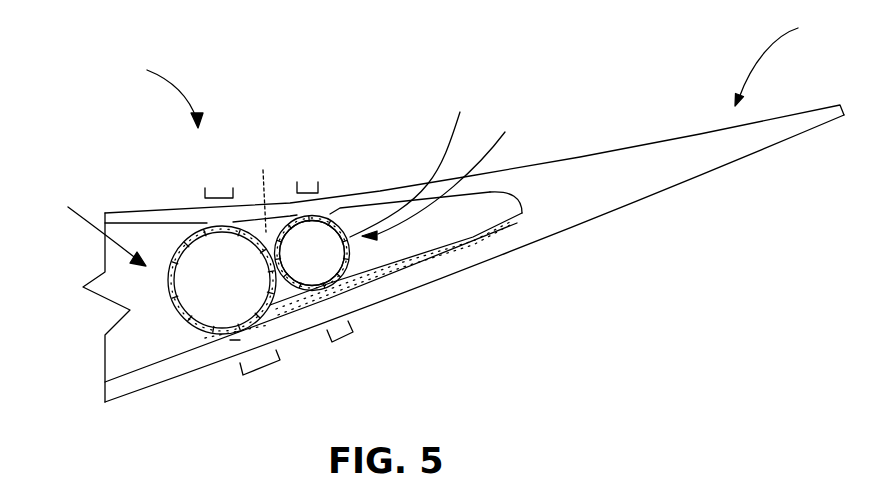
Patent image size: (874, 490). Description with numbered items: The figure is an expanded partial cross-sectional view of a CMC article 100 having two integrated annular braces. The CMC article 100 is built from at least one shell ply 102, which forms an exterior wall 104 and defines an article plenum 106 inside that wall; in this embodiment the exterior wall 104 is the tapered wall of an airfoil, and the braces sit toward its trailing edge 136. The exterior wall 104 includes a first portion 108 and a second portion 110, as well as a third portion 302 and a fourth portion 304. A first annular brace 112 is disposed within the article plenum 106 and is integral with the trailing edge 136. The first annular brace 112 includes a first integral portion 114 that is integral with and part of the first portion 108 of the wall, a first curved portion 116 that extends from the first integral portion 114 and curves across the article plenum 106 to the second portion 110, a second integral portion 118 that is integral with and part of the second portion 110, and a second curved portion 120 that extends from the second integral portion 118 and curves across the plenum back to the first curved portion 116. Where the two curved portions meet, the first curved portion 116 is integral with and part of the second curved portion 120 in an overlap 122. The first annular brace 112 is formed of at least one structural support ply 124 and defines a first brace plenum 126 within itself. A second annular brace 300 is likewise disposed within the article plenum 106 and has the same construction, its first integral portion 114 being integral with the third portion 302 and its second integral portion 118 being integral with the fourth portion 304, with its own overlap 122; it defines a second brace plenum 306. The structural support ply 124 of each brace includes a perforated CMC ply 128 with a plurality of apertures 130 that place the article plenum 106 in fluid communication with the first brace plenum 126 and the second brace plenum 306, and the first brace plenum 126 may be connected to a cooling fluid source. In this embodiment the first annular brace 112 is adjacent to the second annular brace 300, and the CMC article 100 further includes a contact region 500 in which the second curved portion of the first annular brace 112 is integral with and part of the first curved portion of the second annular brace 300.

The CMC article 100 is at (155, 92).
The shell ply 102 is at (327, 216).
The exterior wall 104 is at (633, 148).
The article plenum 106 is at (487, 213).
The first portion 108 is at (260, 368).
The second portion 110 is at (218, 188).
The first annular brace 112 is at (95, 223).
The first integral portion 114 is at (238, 338).
The first curved portion 116 is at (160, 280).
The second integral portion 118 is at (214, 220).
The second curved portion 120 is at (400, 275).
The overlap 122 is at (367, 290).
The structural support ply 124 is at (453, 257).
The first brace plenum 126 is at (212, 275).
The perforated CMC ply 128 is at (485, 252).
The apertures 130 is at (178, 443).
The trailing edge 136 is at (790, 58).
The second annular brace 300 is at (444, 175).
The third portion 302 is at (342, 343).
The fourth portion 304 is at (305, 188).
The second brace plenum 306 is at (316, 248).
The contact region 500 is at (263, 189).